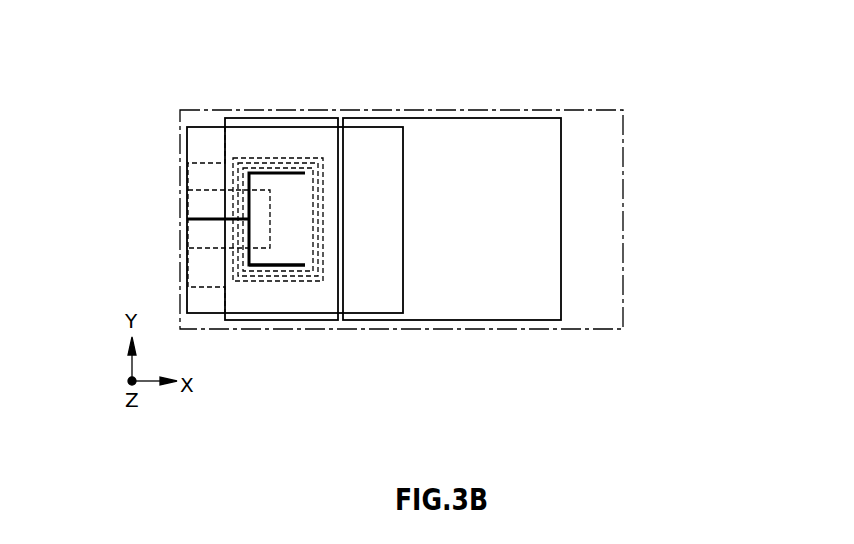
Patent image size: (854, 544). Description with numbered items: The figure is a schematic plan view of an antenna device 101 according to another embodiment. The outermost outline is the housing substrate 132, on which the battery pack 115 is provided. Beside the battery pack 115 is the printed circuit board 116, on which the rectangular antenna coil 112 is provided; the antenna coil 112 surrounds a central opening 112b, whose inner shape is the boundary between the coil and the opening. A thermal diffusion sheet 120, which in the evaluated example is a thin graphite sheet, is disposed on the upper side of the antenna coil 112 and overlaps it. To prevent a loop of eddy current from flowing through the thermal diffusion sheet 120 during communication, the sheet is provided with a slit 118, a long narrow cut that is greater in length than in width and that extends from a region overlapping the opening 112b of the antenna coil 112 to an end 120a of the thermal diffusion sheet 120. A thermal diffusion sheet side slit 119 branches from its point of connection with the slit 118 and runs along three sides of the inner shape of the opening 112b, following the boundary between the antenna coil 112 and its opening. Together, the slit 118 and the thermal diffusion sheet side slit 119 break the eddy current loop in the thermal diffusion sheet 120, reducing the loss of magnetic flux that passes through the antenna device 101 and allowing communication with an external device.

The antenna device 101 is at (582, 85).
The housing substrate 132 is at (623, 163).
The thermal diffusion sheet 120 is at (202, 140).
The end of the thermal diffusion sheet 120a is at (188, 180).
The printed circuit board 116 is at (317, 122).
The battery pack 115 is at (518, 137).
The antenna coil 112 is at (258, 157).
The opening of the antenna coil 112b is at (291, 174).
The slit 118 is at (210, 219).
The thermal diffusion sheet side slit 119 is at (283, 262).